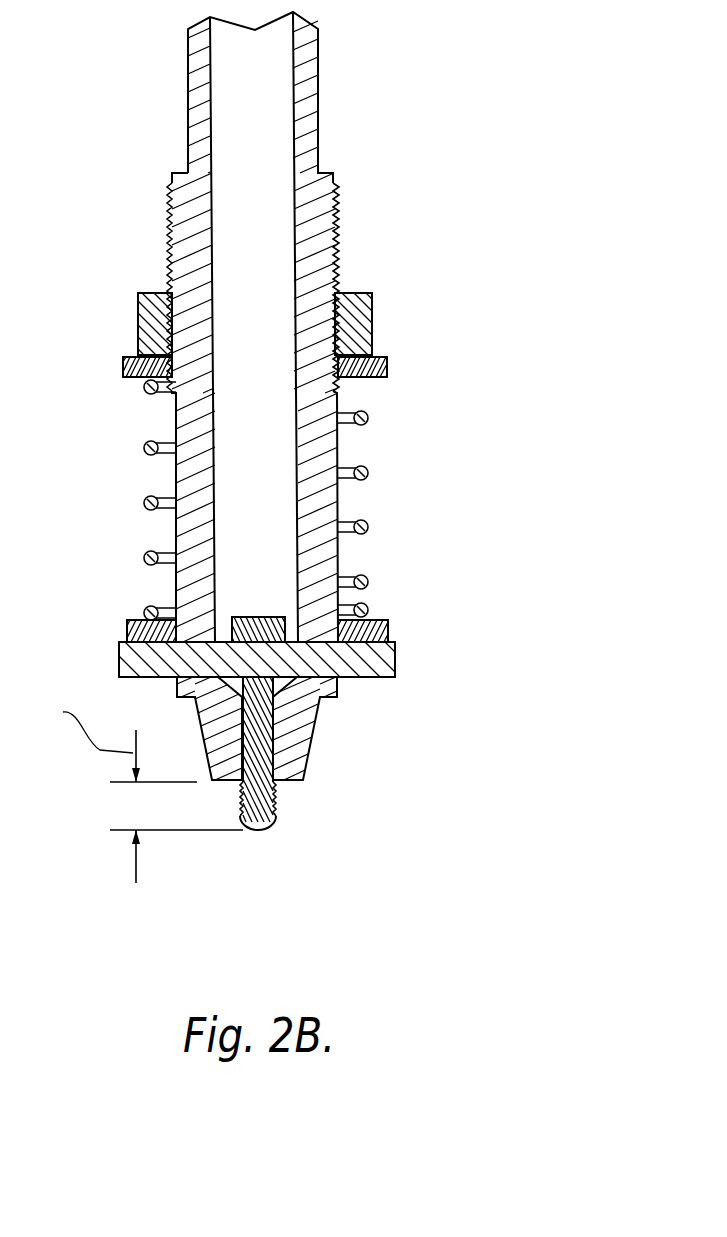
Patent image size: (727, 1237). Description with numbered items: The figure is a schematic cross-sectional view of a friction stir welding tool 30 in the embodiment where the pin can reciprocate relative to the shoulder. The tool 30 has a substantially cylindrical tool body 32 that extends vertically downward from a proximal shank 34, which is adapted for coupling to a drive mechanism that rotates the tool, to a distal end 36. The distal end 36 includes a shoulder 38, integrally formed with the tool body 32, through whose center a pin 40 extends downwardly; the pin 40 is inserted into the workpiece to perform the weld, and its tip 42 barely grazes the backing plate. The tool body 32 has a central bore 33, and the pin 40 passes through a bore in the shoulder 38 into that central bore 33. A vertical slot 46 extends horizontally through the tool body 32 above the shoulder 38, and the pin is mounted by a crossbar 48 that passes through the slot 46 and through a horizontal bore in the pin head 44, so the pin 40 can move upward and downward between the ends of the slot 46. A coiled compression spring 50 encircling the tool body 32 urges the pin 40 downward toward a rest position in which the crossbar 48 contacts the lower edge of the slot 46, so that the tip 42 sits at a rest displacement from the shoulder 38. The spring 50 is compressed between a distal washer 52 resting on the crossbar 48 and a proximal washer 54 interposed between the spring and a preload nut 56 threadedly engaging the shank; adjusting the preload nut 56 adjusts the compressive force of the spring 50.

The tool 30 is at (514, 328).
The tool body 32 is at (321, 133).
The central bore 33 is at (263, 240).
The proximal shank 34 is at (377, 60).
The distal end 36 is at (448, 726).
The shoulder 38 is at (309, 760).
The pin 40 is at (274, 815).
The tip 42 is at (265, 831).
The head 44 is at (258, 617).
The vertical slot 46 is at (195, 632).
The crossbar 48 is at (395, 658).
The coiled compression spring 50 is at (367, 473).
The distal washer 52 is at (391, 630).
The proximal washer 54 is at (388, 362).
The preload nut 56 is at (372, 323).